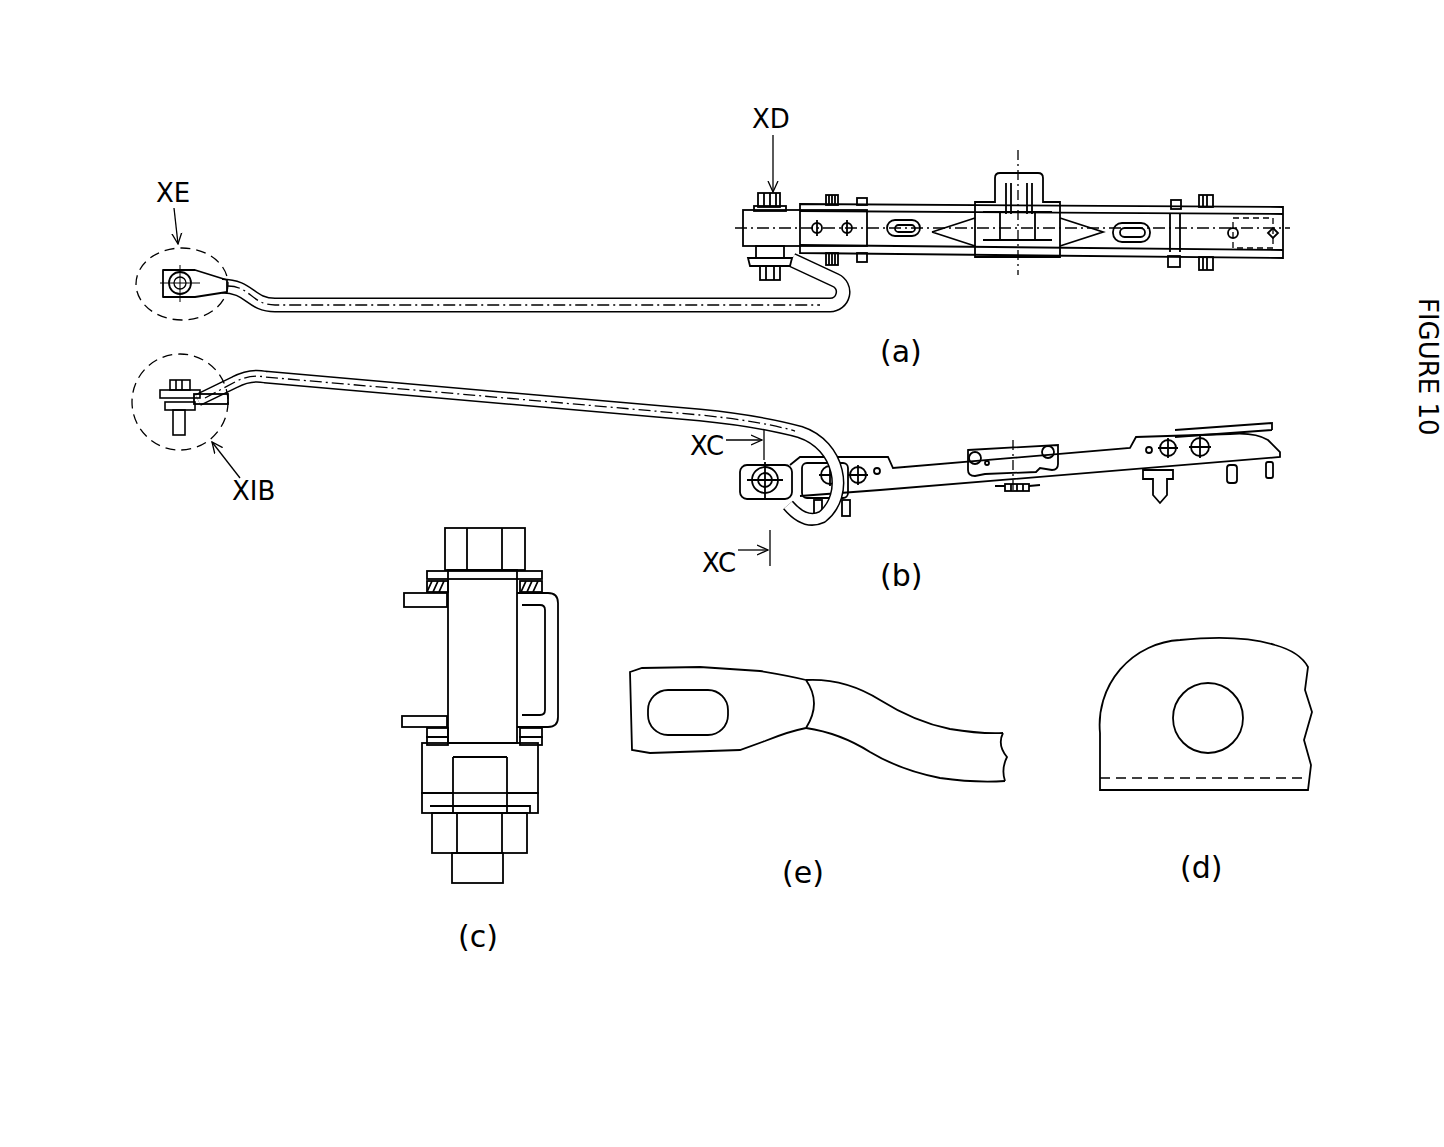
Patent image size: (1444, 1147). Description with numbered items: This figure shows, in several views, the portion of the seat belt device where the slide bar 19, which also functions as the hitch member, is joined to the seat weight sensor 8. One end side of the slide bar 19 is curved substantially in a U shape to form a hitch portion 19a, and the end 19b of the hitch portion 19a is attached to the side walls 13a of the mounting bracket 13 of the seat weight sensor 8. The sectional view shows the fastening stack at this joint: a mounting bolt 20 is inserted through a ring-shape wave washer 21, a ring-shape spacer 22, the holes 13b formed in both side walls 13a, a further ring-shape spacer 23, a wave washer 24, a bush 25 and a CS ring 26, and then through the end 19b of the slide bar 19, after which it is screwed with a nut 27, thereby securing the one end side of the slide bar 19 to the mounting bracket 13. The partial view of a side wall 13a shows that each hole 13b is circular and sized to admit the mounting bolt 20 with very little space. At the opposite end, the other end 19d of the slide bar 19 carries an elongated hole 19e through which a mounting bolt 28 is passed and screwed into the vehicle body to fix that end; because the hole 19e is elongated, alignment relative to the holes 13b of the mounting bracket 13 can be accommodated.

The seat weight sensor 8 is at (1040, 262).
The mounting bracket 13 is at (790, 212).
The side walls 13a is at (418, 606).
The holes 13b is at (1174, 735).
The slide bar 19 is at (545, 295).
The hitch portion 19a is at (850, 282).
The end of the hitch portion 19b is at (428, 806).
The other end 19d is at (205, 276).
The elongated hole 19e is at (688, 720).
The mounting bolt 20 is at (757, 198).
The ring-shape wave washer 21 is at (425, 574).
The ring-shape spacer 22 is at (426, 586).
The ring-shape spacer 23 is at (425, 733).
The wave washer 24 is at (425, 741).
The bush 25 is at (522, 768).
The CS ring 26 is at (538, 795).
The nut 27 is at (528, 836).
The mounting bolt 28 is at (172, 292).